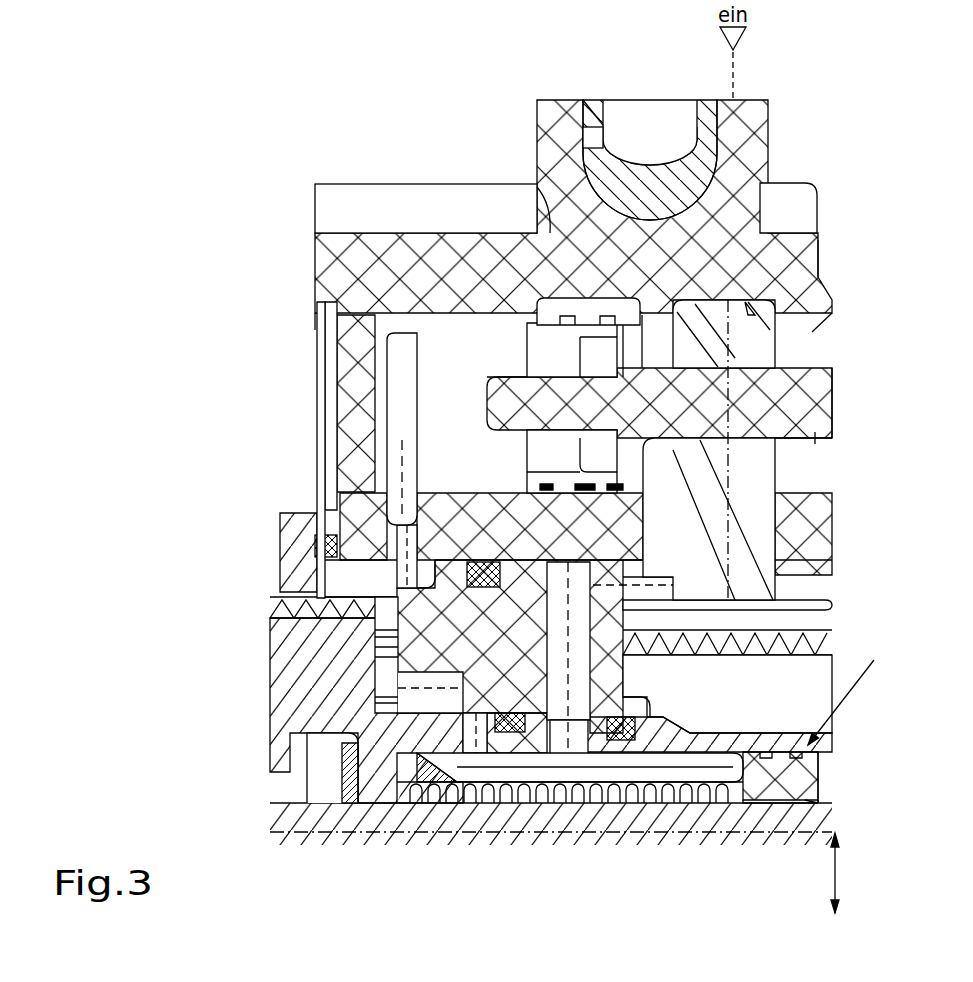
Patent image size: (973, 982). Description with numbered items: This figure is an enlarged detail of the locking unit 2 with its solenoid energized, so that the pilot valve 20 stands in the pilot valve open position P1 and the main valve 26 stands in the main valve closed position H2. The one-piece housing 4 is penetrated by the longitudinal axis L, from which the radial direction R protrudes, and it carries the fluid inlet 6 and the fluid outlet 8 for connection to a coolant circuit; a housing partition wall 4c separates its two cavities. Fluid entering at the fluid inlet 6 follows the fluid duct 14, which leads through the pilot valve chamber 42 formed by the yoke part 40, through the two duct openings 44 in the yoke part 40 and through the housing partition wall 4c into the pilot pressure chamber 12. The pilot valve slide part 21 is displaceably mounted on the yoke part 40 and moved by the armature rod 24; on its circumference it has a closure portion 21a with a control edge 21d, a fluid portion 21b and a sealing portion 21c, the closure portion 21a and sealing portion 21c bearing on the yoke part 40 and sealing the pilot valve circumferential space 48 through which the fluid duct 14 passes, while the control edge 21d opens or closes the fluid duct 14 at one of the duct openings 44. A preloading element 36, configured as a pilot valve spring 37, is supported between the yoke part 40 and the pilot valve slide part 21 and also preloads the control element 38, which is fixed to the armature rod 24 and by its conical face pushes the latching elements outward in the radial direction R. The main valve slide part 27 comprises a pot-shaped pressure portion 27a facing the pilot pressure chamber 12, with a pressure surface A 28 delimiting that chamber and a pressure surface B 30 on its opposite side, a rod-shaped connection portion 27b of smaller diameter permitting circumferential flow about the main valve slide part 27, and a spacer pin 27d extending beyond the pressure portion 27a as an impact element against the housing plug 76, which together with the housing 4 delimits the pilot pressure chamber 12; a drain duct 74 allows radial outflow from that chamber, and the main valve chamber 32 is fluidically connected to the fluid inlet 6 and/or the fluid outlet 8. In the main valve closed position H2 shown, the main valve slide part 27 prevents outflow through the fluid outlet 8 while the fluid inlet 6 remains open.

The locking unit 2 is at (812, 262).
The housing 4 is at (830, 300).
The housing partition wall 4c is at (826, 533).
The fluid inlet 6 is at (765, 240).
The fluid outlet 8 is at (528, 315).
The pilot pressure chamber 12 is at (317, 320).
The fluid duct 14 is at (367, 668).
The pilot valve 20 is at (830, 733).
The pilot valve slide part 21 is at (751, 785).
The closure portion 21a is at (440, 768).
The fluid portion 21b is at (655, 775).
The sealing portion 21c is at (780, 777).
The control edge 21d is at (478, 770).
The armature rod 24 is at (330, 840).
The main valve 26 is at (815, 437).
The main valve slide part 27 is at (822, 413).
The pot-shaped pressure portion 27a is at (553, 310).
The rod-shaped connection portion 27b is at (786, 440).
The spacer pin 27d is at (470, 328).
The pressure surface A 28 is at (490, 320).
The pressure surface B 30 is at (646, 320).
The main valve chamber 32 is at (812, 332).
The preloading element 36 is at (612, 790).
The pilot valve spring 37 is at (644, 839).
The control element 38 is at (823, 777).
The yoke part 40 is at (375, 703).
The pilot valve chamber 42 is at (397, 793).
The duct openings 44 is at (481, 760).
The pilot valve circumferential space 48 is at (678, 762).
The drain duct 74 is at (355, 381).
The housing plug 76 is at (332, 352).
The main valve closed position H2 is at (827, 383).
The longitudinal axis L is at (812, 832).
The pilot valve open position P1 is at (857, 684).
The radial direction R is at (838, 866).